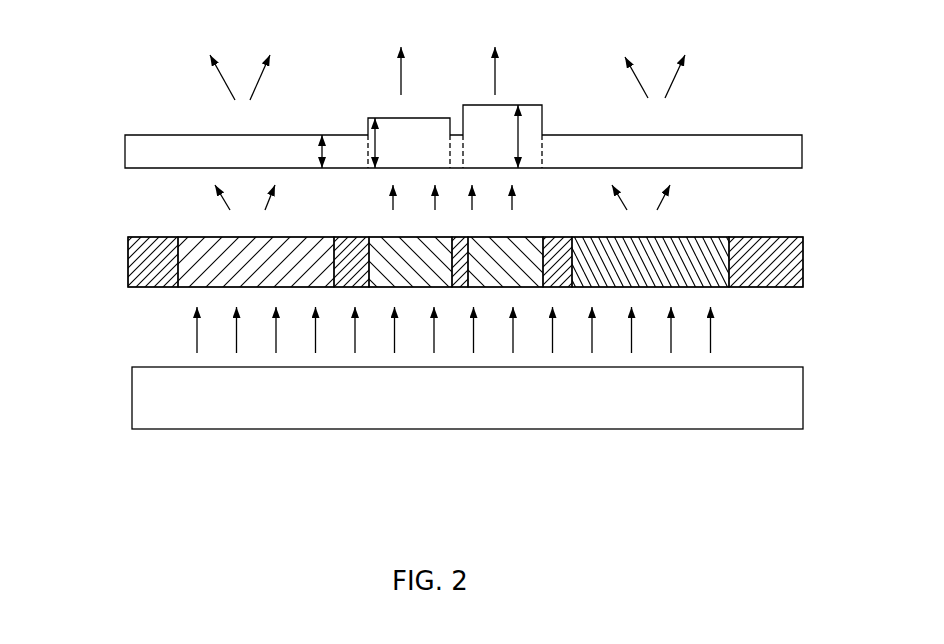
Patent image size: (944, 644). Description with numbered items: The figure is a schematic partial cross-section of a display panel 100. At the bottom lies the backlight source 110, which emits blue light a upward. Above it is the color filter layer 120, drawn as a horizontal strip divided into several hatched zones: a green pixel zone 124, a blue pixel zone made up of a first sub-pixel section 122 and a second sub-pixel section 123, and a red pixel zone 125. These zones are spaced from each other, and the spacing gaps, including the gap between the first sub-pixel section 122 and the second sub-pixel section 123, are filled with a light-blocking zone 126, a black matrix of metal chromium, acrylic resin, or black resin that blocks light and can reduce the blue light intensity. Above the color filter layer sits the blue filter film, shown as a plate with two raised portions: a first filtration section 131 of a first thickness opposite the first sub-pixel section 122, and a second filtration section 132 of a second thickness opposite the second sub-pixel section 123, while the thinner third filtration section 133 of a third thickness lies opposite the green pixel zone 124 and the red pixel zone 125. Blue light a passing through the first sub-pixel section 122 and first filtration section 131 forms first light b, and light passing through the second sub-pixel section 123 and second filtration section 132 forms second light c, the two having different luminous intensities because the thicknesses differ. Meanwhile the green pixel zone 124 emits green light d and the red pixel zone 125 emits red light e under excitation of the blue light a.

The display panel 100 is at (103, 130).
The backlight source 110 is at (140, 405).
The color filter layer 120 is at (469, 334).
The first sub-pixel section 122 is at (395, 277).
The second sub-pixel section 123 is at (516, 277).
The green pixel zone 124 is at (205, 268).
The red pixel zone 125 is at (703, 260).
The light-blocking zone 126 is at (153, 275).
The first filtration section 131 is at (410, 130).
The second filtration section 132 is at (497, 115).
The third filtration section 133 is at (218, 147).